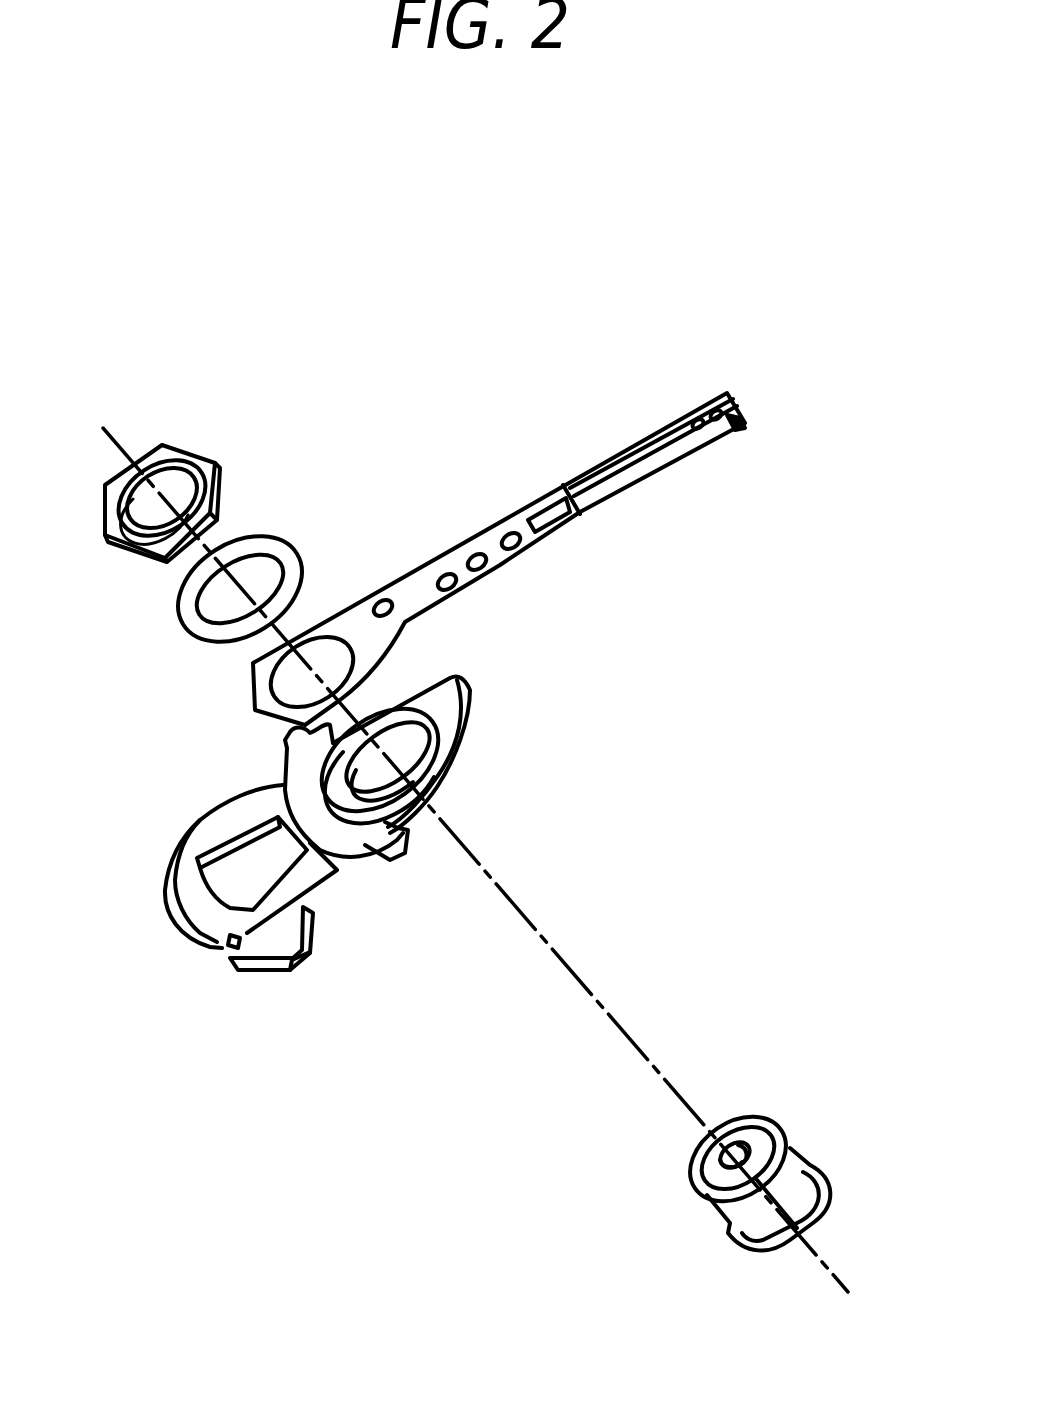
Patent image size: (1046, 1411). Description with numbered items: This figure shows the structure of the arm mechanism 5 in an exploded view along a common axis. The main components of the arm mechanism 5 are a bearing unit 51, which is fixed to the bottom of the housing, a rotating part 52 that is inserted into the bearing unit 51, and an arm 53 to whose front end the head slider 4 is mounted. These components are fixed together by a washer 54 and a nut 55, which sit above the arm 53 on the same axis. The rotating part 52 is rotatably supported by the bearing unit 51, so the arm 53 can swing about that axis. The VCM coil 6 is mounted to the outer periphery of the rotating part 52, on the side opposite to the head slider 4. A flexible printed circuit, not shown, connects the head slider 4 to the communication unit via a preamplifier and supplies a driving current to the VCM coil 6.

The arm mechanism 5 is at (537, 307).
The nut 55 is at (187, 443).
The washer 54 is at (277, 536).
The arm 53 is at (437, 557).
The head slider 4 is at (739, 425).
The rotating part 52 is at (478, 718).
The VCM coil 6 is at (168, 873).
The bearing unit 51 is at (787, 1148).